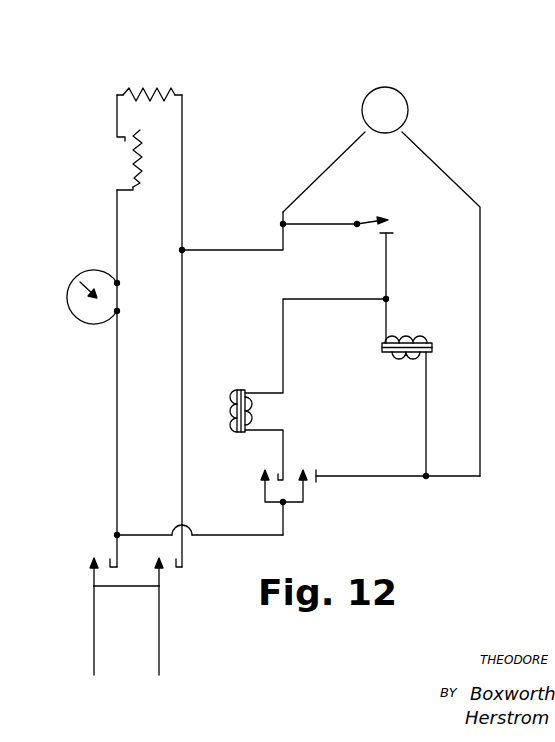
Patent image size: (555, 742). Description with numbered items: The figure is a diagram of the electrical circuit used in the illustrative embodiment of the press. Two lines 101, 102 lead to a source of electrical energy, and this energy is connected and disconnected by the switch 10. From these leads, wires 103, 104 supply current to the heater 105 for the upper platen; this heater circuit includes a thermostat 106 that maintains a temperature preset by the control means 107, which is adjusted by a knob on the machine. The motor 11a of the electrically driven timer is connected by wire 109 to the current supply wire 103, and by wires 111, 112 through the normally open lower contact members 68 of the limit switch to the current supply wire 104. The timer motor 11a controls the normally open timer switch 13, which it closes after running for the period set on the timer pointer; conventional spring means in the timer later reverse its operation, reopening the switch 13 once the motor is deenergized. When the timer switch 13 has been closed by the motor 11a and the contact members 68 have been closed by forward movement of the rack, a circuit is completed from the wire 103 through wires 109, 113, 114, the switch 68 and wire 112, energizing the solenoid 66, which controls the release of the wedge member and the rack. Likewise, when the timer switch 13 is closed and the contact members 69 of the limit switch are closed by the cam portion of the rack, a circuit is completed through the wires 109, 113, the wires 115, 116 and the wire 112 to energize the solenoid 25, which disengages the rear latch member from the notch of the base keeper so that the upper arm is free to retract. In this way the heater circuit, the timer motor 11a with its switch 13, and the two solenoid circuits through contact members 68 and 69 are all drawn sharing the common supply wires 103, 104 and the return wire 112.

The switch 10 is at (100, 556).
The motor 11a is at (403, 93).
The timer switch 13 is at (390, 224).
The solenoid 25 is at (250, 410).
The solenoid 66 is at (415, 338).
The lower contact members 68 is at (312, 482).
The contact members 69 is at (262, 480).
The line 101 is at (94, 652).
The line 102 is at (159, 667).
The wire 103 is at (182, 492).
The wire 104 is at (117, 472).
The heater 105 is at (160, 91).
The thermostat 106 is at (128, 168).
The control means 107 is at (72, 290).
The wire 109 is at (255, 250).
The wire 111 is at (480, 342).
The wire 112 is at (237, 535).
The wire 113 is at (386, 288).
The wire 114 is at (426, 430).
The wire 115 is at (283, 357).
The wire 116 is at (285, 452).